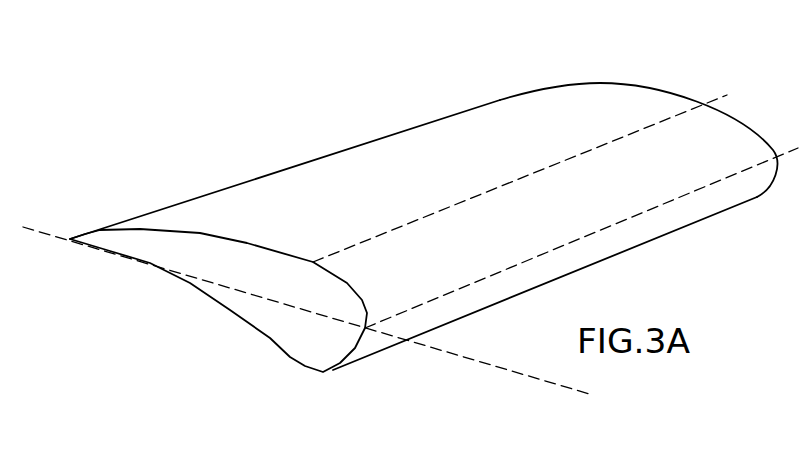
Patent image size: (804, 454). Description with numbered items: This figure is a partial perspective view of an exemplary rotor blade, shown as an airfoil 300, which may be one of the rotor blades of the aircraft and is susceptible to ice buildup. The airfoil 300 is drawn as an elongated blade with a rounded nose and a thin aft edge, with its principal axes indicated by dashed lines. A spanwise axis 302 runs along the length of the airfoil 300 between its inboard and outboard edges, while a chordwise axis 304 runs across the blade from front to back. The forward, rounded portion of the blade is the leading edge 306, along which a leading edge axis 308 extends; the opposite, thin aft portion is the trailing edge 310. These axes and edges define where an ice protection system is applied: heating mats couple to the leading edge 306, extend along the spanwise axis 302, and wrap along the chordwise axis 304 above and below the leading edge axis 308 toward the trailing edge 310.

The airfoil 300 is at (616, 74).
The spanwise axis 302 is at (518, 170).
The chordwise axis 304 is at (474, 365).
The leading edge 306 is at (667, 223).
The leading edge axis 308 is at (718, 170).
The trailing edge 310 is at (365, 142).